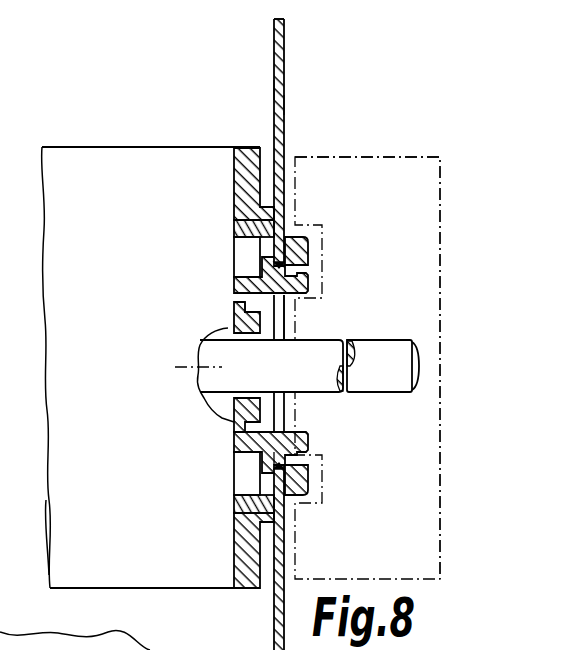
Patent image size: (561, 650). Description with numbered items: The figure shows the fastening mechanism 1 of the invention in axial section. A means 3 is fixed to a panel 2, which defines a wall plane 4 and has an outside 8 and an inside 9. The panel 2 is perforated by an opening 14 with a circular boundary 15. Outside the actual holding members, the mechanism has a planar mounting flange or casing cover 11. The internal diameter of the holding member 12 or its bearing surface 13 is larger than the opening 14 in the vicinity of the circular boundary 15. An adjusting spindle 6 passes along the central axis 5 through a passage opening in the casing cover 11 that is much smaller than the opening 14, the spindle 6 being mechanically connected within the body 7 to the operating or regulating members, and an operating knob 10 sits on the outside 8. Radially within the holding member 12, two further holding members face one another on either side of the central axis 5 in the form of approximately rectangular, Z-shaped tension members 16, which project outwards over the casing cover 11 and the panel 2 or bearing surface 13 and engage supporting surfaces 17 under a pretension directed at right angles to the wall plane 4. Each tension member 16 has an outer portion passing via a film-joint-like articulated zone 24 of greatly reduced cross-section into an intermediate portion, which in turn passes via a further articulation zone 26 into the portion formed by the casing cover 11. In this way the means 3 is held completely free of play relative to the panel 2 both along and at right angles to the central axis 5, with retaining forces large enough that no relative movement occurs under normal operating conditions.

The fastening mechanism 1 is at (343, 414).
The panel 2 is at (283, 103).
The means 3 is at (92, 142).
The wall plane 4 is at (279, 1).
The central axis 5 is at (175, 366).
The adjusting spindle 6 is at (387, 353).
The body 7 is at (62, 531).
The outside of panel 8 is at (287, 62).
The inside of panel 9 is at (268, 90).
The operating knob 10 is at (377, 157).
The casing cover 11 is at (234, 176).
The holding member 12 is at (248, 224).
The bearing surface 13 is at (268, 224).
The opening 14 is at (288, 316).
The circular boundary 15 is at (277, 459).
The tension member 16 is at (310, 248).
The supporting surface 17 is at (276, 258).
The articulated zone 24 is at (295, 268).
The articulation zone 26 is at (238, 302).